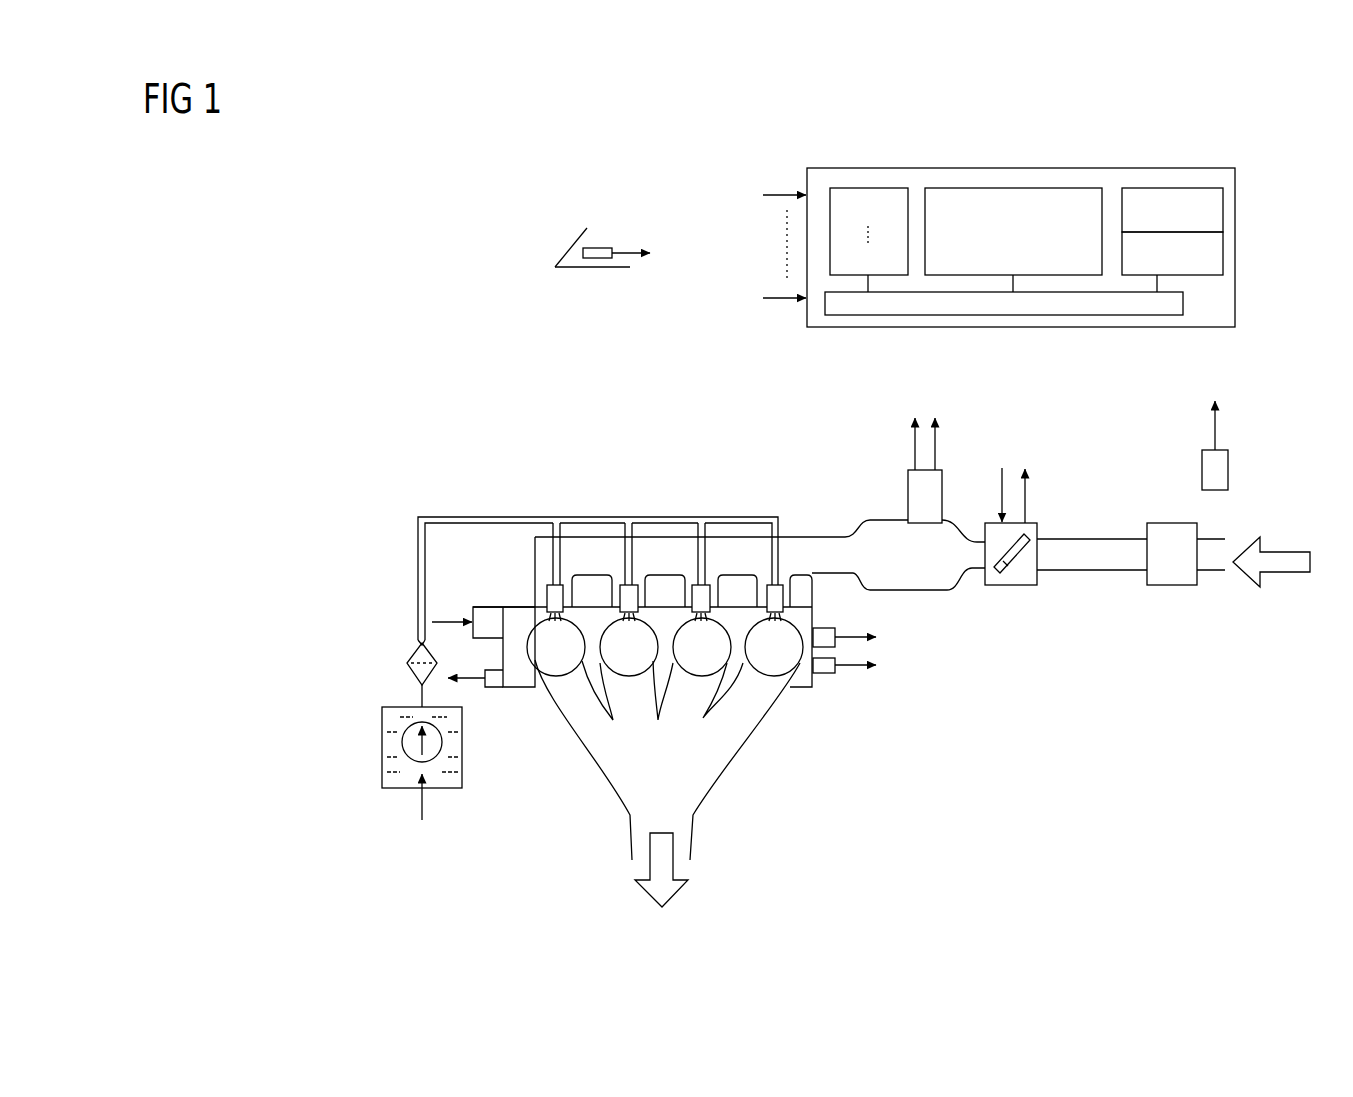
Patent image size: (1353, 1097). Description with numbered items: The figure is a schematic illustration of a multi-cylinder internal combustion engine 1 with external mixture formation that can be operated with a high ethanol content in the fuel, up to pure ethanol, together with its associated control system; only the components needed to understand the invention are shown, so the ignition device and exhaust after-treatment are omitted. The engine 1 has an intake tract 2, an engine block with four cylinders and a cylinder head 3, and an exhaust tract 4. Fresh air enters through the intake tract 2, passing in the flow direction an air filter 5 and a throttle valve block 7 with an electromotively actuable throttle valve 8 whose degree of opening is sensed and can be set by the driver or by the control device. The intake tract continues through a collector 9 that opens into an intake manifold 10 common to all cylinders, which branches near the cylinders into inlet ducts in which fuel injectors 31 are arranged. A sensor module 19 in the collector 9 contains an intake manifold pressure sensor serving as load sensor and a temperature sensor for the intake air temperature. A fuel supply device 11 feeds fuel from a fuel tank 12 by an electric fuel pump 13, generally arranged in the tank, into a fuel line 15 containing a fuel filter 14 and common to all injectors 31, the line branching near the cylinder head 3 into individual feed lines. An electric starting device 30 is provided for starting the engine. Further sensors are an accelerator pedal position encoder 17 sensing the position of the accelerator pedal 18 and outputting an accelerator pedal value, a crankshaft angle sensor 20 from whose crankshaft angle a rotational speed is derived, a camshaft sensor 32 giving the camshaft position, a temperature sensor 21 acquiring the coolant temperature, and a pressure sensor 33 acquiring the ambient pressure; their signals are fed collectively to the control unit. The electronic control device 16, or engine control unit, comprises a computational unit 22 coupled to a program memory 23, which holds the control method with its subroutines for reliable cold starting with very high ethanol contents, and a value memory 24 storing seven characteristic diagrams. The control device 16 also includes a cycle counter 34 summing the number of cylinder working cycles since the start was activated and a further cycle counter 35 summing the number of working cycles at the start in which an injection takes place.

The internal combustion engine 1 is at (738, 751).
The intake tract 2 is at (1099, 605).
The cylinder head 3 is at (800, 684).
The exhaust tract 4 is at (683, 815).
The air filter 5 is at (1187, 574).
The throttle valve block 7 is at (1027, 578).
The throttle valve 8 is at (1012, 573).
The collector 9 is at (880, 546).
The intake manifold 10 is at (815, 546).
The fuel supply device 11 is at (387, 609).
The fuel tank 12 is at (388, 780).
The electric fuel pump 13 is at (431, 750).
The fuel filter 14 is at (405, 665).
The fuel line 15 is at (449, 517).
The electronic control device 16 is at (945, 181).
The accelerator pedal position encoder 17 is at (596, 248).
The accelerator pedal 18 is at (580, 236).
The sensor module 19 is at (908, 473).
The crankshaft angle sensor 20 is at (495, 690).
The temperature sensor 21 is at (823, 675).
The computational unit 22 is at (1168, 306).
The program memory 23 is at (987, 197).
The value memory 24 is at (838, 197).
The electric starting device 30 is at (488, 605).
The fuel injectors 31 is at (547, 594).
The camshaft sensor 32 is at (838, 628).
The pressure sensor 33 is at (1230, 467).
The cycle counter 34 is at (1130, 197).
The further cycle counter 35 is at (1216, 262).